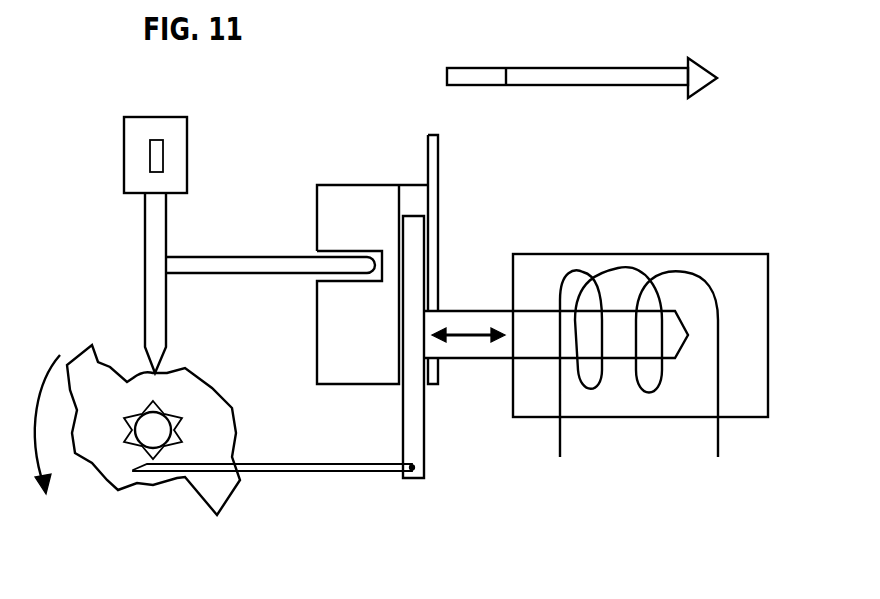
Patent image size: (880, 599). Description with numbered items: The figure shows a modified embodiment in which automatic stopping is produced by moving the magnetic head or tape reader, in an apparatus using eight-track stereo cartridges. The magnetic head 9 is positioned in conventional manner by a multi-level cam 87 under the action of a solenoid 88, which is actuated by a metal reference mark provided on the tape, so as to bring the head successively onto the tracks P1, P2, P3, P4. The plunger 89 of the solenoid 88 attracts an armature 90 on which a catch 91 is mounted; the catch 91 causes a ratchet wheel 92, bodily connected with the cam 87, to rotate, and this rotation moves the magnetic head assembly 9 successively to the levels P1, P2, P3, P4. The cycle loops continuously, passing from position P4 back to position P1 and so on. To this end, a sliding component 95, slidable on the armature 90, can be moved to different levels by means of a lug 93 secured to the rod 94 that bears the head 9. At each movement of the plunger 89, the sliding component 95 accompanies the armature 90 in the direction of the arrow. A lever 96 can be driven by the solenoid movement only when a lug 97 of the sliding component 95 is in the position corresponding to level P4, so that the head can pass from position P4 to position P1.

The magnetic head 9 is at (172, 148).
The multi-level cam 87 is at (97, 372).
The solenoid 88 is at (637, 263).
The plunger 89 is at (470, 358).
The armature 90 is at (424, 443).
The catch 91 is at (332, 471).
The ratchet wheel 92 is at (135, 429).
The lug 93 is at (231, 266).
The rod 94 is at (152, 238).
The sliding component 95 is at (342, 200).
The lever 96 is at (575, 80).
The lug 97 is at (434, 163).
The track position P1 is at (167, 372).
The track position P2 is at (202, 378).
The track position P3 is at (73, 437).
The track position P4 is at (78, 357).